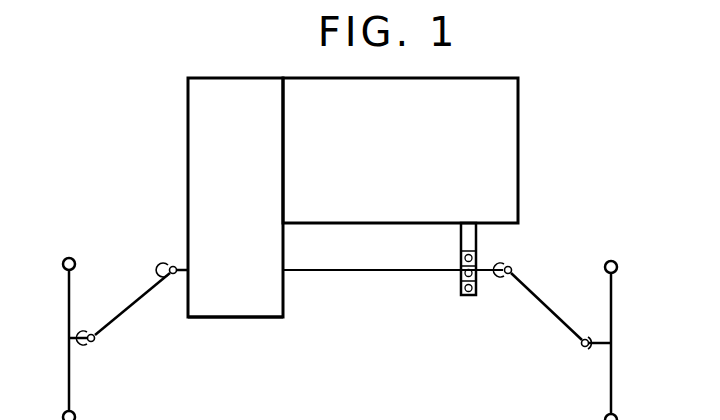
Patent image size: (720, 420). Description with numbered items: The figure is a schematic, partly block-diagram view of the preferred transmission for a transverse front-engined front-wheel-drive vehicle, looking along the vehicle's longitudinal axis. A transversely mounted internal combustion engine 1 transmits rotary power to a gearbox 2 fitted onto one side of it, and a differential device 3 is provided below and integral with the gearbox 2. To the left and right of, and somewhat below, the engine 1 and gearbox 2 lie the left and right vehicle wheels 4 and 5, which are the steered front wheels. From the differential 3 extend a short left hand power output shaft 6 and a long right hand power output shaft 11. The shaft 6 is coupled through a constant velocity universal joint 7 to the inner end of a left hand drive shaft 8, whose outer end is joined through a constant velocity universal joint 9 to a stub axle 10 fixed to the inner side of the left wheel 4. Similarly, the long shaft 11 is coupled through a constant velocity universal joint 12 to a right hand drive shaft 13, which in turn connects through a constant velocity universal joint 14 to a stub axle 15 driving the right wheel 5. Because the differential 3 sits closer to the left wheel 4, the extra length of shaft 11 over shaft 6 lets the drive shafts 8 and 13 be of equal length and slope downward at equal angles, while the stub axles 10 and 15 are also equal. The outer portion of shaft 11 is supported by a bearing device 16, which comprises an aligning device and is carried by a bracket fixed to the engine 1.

The internal combustion engine 1 is at (519, 100).
The gearbox 2 is at (200, 92).
The differential device 3 is at (238, 310).
The left vehicle wheel 4 is at (69, 297).
The right vehicle wheel 5 is at (612, 312).
The short left hand power output shaft 6 is at (178, 264).
The constant velocity universal joint 7 is at (175, 290).
The left hand drive shaft 8 is at (136, 306).
The constant velocity universal joint 9 is at (96, 342).
The stub axle 10 is at (75, 341).
The long right hand power output shaft 11 is at (392, 272).
The constant velocity universal joint 12 is at (514, 268).
The right hand drive shaft 13 is at (550, 308).
The constant velocity universal joint 14 is at (580, 349).
The stub axle 15 is at (599, 346).
The bearing device 16 is at (477, 251).